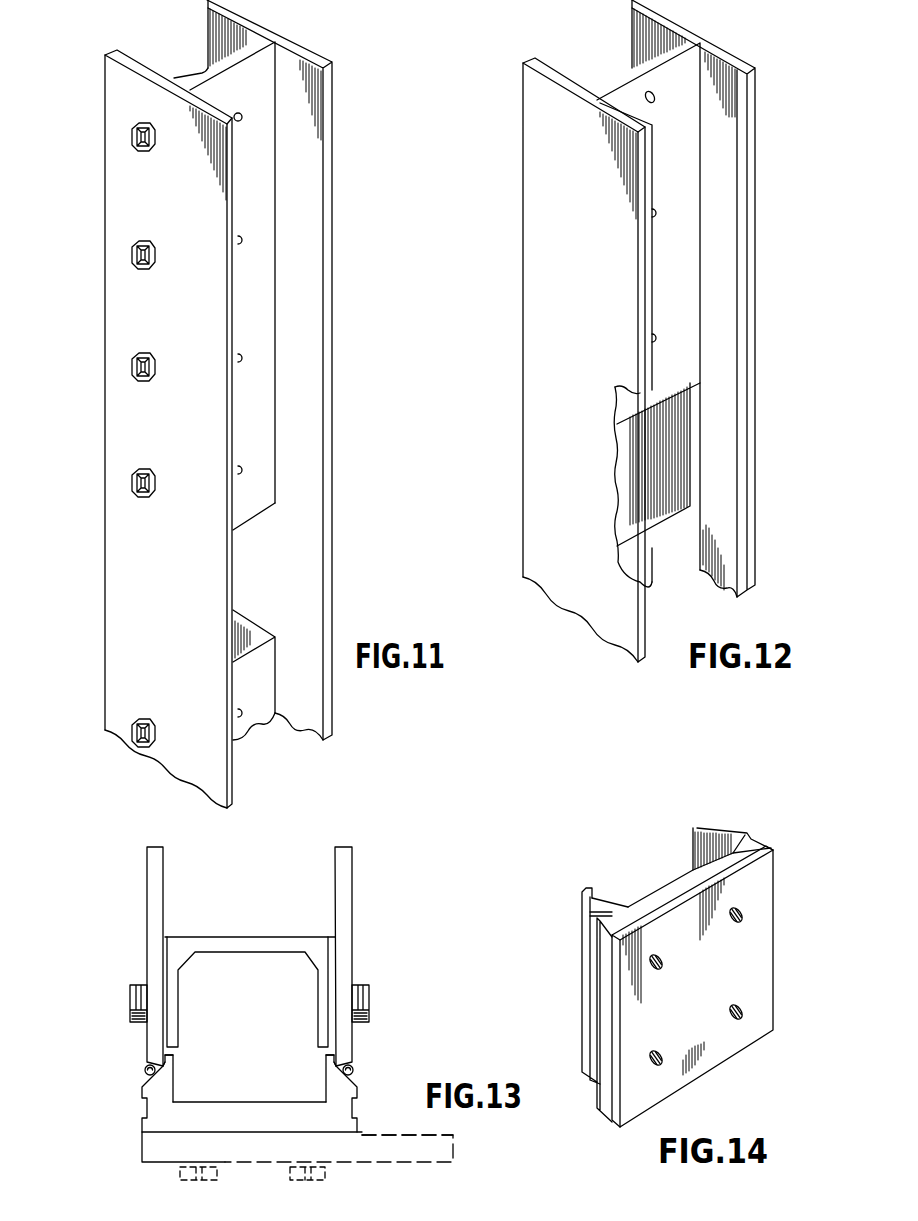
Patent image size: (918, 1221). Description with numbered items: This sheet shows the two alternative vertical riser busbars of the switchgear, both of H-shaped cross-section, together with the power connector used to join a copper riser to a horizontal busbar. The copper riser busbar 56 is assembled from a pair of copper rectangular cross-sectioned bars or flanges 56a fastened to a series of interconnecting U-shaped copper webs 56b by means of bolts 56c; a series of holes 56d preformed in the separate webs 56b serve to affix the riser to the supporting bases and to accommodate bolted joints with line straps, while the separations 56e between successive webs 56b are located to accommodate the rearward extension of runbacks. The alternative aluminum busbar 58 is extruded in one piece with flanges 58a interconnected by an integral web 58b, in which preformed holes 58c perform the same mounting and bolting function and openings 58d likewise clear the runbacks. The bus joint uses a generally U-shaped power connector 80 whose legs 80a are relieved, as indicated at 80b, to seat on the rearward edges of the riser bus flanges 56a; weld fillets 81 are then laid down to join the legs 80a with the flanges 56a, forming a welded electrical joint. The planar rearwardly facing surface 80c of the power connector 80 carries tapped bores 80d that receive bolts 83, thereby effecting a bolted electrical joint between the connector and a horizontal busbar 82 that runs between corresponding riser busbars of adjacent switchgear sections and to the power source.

In FIG. 11, the copper riser busbar 56 is at (222, 404).
In FIG. 11, the flanges 56a is at (328, 88).
In FIG. 13, the flanges 56a is at (150, 879).
In FIG. 11, the U-shaped copper webs 56b is at (202, 68).
In FIG. 13, the U-shaped copper webs 56b is at (244, 943).
In FIG. 11, the bolts 56c is at (131, 248).
In FIG. 13, the bolts 56c is at (130, 1003).
In FIG. 11, the holes 56d is at (238, 121).
In FIG. 11, the separations 56e is at (237, 530).
In FIG. 12, the aluminum busbar 58 is at (646, 331).
In FIG. 12, the flanges 58a is at (543, 229).
In FIG. 12, the integral web 58b is at (622, 86).
In FIG. 12, the preformed holes 58c is at (654, 214).
In FIG. 12, the openings 58d is at (620, 425).
In FIG. 13, the power connector 80 is at (272, 1096).
In FIG. 14, the power connector 80 is at (675, 954).
In FIG. 13, the legs 80a is at (175, 1062).
In FIG. 14, the legs 80a is at (693, 842).
In FIG. 13, the relieved portions 80b is at (160, 1057).
In FIG. 14, the relieved portions 80b is at (708, 830).
In FIG. 13, the planar rearwardly facing surface 80c is at (168, 1136).
In FIG. 14, the planar rearwardly facing surface 80c is at (767, 892).
In FIG. 14, the tapped bores 80d is at (743, 1006).
In FIG. 13, the weld fillets 81 is at (146, 1070).
In FIG. 13, the horizontal busbar 82 is at (413, 1165).
In FIG. 13, the bolts 83 is at (290, 1178).